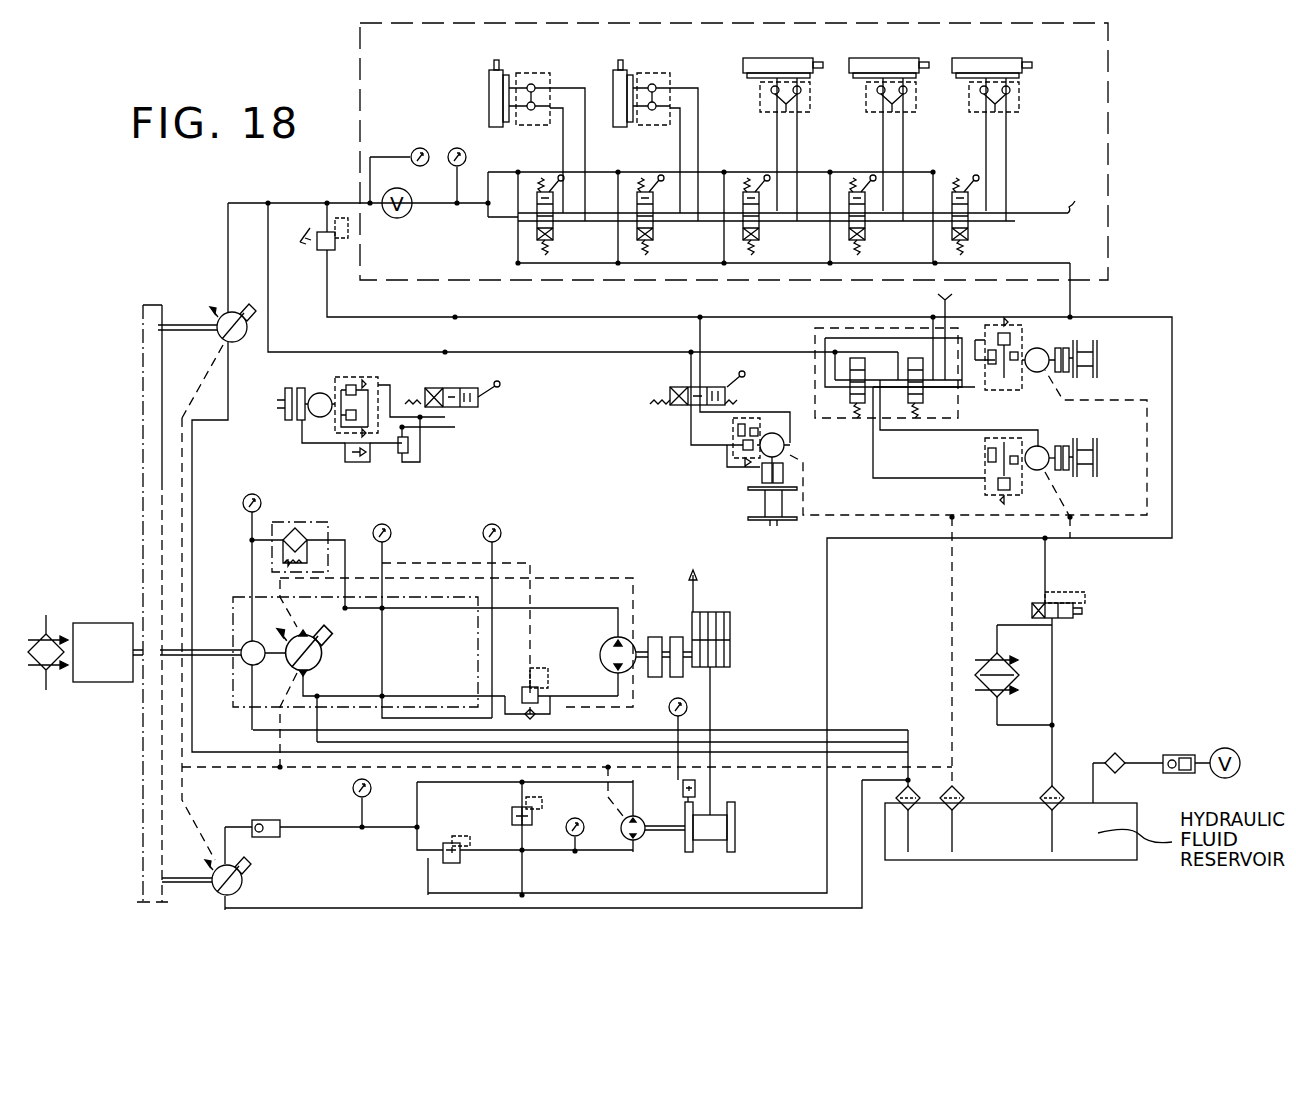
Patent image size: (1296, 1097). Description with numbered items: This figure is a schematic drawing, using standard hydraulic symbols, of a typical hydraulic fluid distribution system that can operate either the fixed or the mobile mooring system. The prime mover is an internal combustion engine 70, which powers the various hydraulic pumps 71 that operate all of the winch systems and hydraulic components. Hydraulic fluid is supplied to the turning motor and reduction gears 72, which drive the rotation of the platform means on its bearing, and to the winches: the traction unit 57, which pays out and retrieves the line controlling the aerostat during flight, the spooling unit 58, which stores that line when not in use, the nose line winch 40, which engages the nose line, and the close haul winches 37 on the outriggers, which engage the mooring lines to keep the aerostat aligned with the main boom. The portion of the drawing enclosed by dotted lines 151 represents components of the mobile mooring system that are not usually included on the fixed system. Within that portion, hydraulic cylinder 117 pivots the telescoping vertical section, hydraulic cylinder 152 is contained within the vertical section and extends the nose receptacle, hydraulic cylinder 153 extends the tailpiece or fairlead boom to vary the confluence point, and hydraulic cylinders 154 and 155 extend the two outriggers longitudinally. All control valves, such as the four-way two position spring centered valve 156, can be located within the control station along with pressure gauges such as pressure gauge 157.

The dotted lines 151 is at (1108, 72).
The hydraulic cylinder 117 is at (489, 80).
The hydraulic cylinder 152 is at (613, 80).
The hydraulic cylinder 153 is at (760, 62).
The hydraulic cylinder 154 is at (896, 62).
The hydraulic cylinder 155 is at (1017, 62).
The hydraulic pumps 71 is at (210, 318).
The turning motor and reduction gears 72 is at (315, 395).
The four-way two position spring centered valve 156 is at (670, 390).
The nose line winch 40 is at (765, 500).
The close haul winch 37 is at (1100, 360).
The pressure gauge 157 is at (492, 524).
The internal combustion engine 70 is at (92, 633).
The traction unit 57 is at (730, 638).
The spooling unit 58 is at (740, 808).